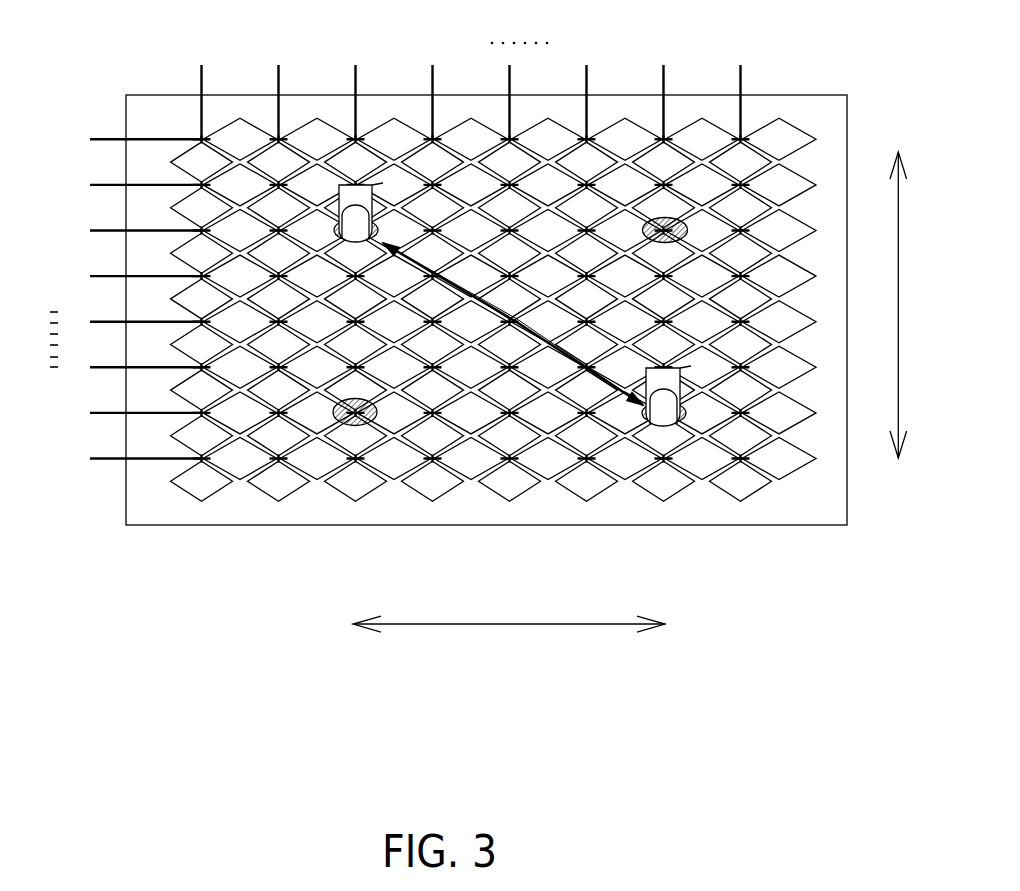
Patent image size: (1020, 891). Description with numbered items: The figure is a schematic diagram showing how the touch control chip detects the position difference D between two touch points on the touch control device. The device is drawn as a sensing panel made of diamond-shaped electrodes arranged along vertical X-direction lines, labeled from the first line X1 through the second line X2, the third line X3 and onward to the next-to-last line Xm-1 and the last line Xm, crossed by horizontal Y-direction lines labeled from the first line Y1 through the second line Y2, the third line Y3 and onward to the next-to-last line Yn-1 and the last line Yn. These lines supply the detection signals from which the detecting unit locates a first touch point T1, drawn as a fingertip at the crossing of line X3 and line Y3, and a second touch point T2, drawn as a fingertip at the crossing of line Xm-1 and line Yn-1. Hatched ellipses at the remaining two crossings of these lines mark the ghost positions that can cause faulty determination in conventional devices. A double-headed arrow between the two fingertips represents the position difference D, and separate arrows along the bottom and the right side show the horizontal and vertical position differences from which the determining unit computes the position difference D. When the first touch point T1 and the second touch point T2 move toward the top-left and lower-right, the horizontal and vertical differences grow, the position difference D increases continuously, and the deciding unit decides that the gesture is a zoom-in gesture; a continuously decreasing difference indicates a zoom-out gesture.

The first touch point T1 is at (334, 231).
The second touch point T2 is at (647, 424).
The position difference D is at (513, 324).
The first X detection line X1 is at (202, 85).
The second X detection line X2 is at (271, 85).
The third X detection line X3 is at (352, 85).
The (m-1)th X detection line Xm-1 is at (666, 85).
The m-th X detection line Xm is at (738, 85).
The first Y detection line Y1 is at (129, 139).
The second Y detection line Y2 is at (129, 183).
The third Y detection line Y3 is at (129, 228).
The (n-1)th Y detection line Yn-1 is at (122, 415).
The n-th Y detection line Yn is at (129, 458).